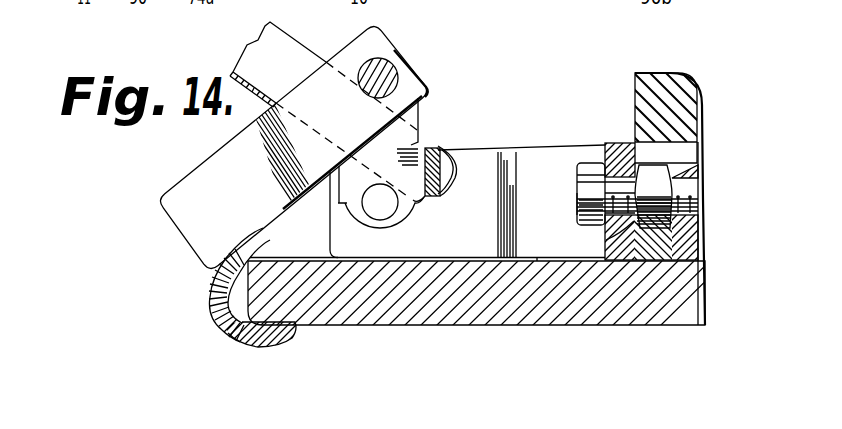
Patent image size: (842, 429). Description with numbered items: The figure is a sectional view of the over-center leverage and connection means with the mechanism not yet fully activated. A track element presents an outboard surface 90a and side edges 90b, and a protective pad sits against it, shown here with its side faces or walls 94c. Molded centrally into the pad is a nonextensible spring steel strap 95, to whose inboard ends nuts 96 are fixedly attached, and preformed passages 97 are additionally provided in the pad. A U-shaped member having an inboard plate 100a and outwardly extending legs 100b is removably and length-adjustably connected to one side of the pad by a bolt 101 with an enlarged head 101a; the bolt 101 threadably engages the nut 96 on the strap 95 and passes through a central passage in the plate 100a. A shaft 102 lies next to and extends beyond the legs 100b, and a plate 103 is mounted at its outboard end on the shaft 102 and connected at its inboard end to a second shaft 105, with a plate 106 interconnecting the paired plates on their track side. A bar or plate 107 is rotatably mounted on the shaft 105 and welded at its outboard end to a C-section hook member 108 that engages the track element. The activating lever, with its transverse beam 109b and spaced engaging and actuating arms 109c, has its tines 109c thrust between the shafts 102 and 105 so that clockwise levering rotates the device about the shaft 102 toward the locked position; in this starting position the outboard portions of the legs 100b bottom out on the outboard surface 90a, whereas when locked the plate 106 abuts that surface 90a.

The outboard surface 90a is at (538, 257).
The side edges 90b is at (227, 330).
The side faces or walls 94c is at (635, 77).
The spring steel strap 95 is at (695, 153).
The nuts 96 is at (605, 239).
The preformed passages 97 is at (699, 201).
The inboard plate 100a is at (620, 143).
The outwardly extending legs 100b is at (553, 148).
The bolt 101 is at (613, 193).
The enlarged head 101a is at (577, 201).
The shaft 102 is at (397, 210).
The plate 103 is at (338, 203).
The shaft 105 is at (389, 59).
The plate 106 is at (430, 148).
The bar or plate 107 is at (172, 217).
The C-section hook member 108 is at (210, 307).
The transverse beam 109b is at (277, 38).
The engaging and actuating arms 109c is at (447, 178).